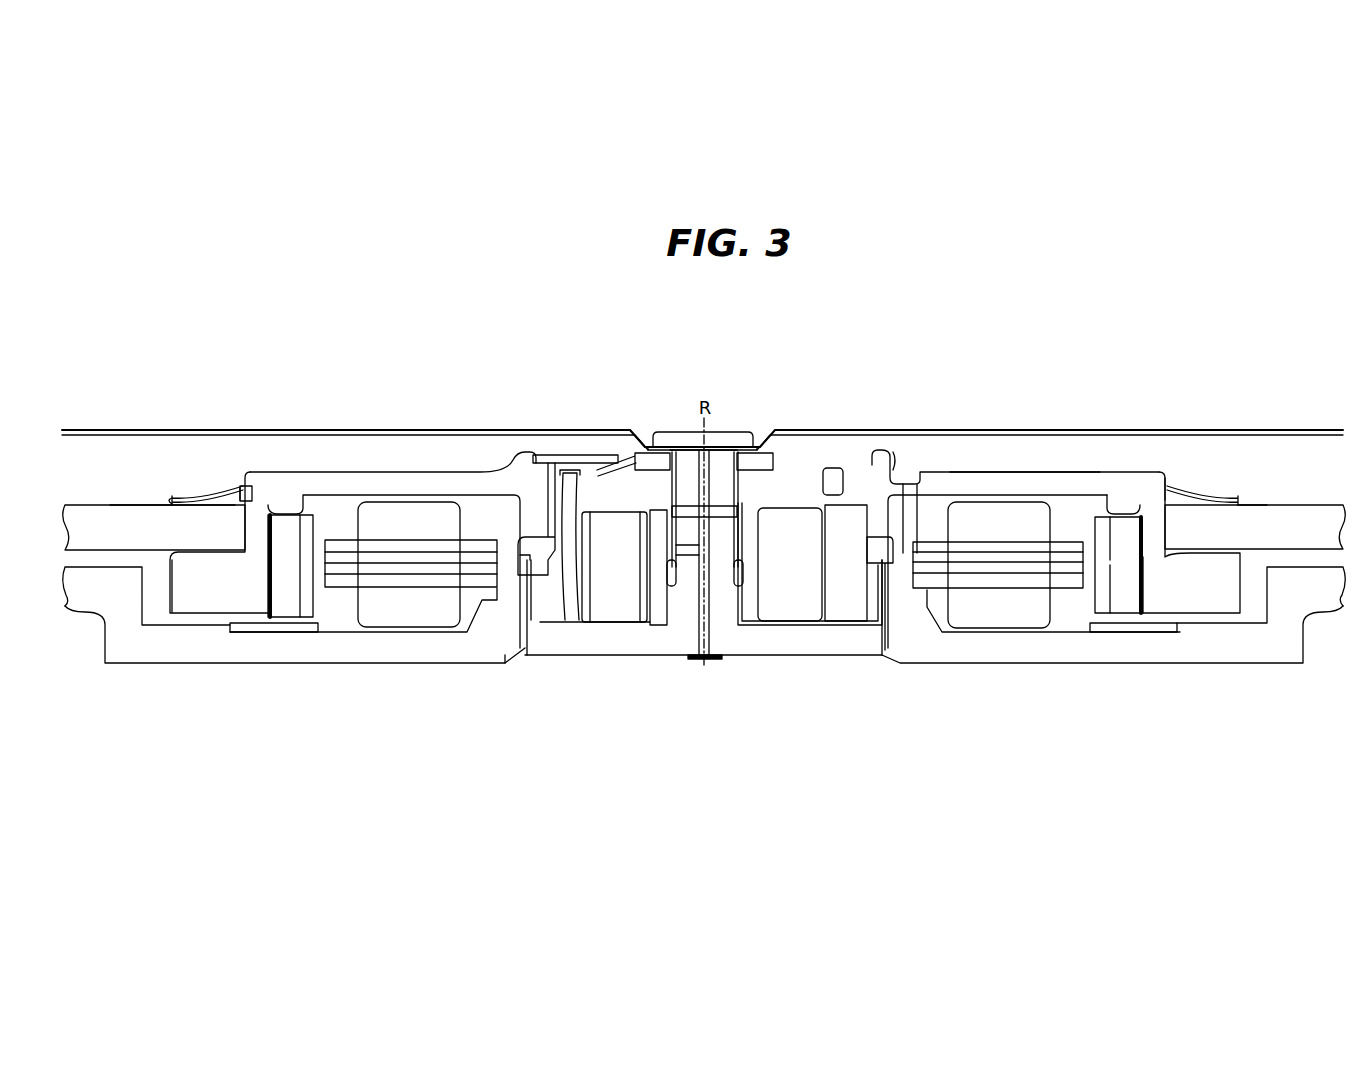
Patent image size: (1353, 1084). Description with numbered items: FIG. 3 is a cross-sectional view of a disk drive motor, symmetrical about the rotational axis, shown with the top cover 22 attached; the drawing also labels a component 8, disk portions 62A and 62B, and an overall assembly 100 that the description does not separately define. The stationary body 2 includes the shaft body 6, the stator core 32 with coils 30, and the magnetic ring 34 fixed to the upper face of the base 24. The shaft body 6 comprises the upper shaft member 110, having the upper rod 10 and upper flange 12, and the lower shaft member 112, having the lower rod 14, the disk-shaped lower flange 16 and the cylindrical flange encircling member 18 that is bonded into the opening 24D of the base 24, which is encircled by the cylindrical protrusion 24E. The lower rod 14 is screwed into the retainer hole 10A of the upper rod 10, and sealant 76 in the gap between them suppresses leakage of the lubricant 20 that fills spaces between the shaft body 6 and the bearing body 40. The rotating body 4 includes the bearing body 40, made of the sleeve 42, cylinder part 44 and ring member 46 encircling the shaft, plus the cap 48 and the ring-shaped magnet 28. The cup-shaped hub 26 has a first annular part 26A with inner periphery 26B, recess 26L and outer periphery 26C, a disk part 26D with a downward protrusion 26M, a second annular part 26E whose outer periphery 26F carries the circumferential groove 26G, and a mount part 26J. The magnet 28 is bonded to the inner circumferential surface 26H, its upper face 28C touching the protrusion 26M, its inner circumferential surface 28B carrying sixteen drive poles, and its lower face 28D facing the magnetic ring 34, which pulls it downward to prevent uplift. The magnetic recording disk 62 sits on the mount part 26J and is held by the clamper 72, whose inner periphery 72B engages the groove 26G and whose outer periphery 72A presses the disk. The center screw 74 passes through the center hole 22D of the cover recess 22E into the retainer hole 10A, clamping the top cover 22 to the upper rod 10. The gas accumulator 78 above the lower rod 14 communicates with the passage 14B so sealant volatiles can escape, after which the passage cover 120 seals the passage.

The stationary body 2 is at (1083, 684).
The rotating body 4 is at (1044, 462).
The shaft body 6 is at (817, 737).
The magnetic circuit 8 is at (282, 695).
The upper rod 10 is at (700, 640).
The retainer hole 10A is at (652, 470).
The upper flange 12 is at (637, 605).
The lower rod 14 is at (750, 620).
The passage 14B is at (668, 530).
The lower flange 16 is at (790, 645).
The flange encircling member 18 is at (870, 632).
The lubricant 20 is at (765, 560).
The top cover 22 is at (813, 432).
The center hole 22D is at (677, 442).
The cover recess 22E is at (757, 445).
The base 24 is at (1165, 655).
The opening 24D is at (490, 640).
The cylindrical protrusion 24E is at (512, 553).
The hub 26 is at (920, 468).
The first annular part 26A is at (832, 467).
The inner periphery 26B is at (530, 470).
The outer periphery 26C is at (907, 480).
The disk part 26D is at (1000, 468).
The second annular part 26E is at (1159, 474).
The outer periphery 26F is at (1180, 527).
The circumferential groove 26G is at (256, 490).
The inner circumferential surface 26H is at (1145, 568).
The mount part 26J is at (196, 608).
The recess 26L is at (884, 449).
The protrusion 26M is at (1106, 503).
The magnet 28 is at (292, 618).
The inner circumferential surface 28B is at (1098, 602).
The upper face 28C is at (1118, 517).
The lower face 28D is at (303, 607).
The coils 30 is at (395, 615).
The stator core 32 is at (352, 578).
The magnetic ring 34 is at (265, 634).
The bearing body 40 is at (525, 705).
The sleeve 42 is at (605, 622).
The cylinder part 44 is at (535, 625).
The ring member 46 is at (570, 612).
The cap 48 is at (592, 460).
The magnetic recording disk 62 is at (83, 513).
The support upper surface 62A is at (122, 504).
The support lower part 62B is at (122, 552).
The clamper 72 is at (206, 494).
The outer periphery 72A is at (172, 497).
The inner periphery 72B is at (243, 486).
The center screw 74 is at (692, 438).
The sealant 76 is at (673, 590).
The gas accumulator 78 is at (718, 513).
The display device 100 is at (948, 690).
The upper shaft member 110 is at (640, 705).
The lower shaft member 112 is at (858, 705).
The passage cover 120 is at (709, 660).